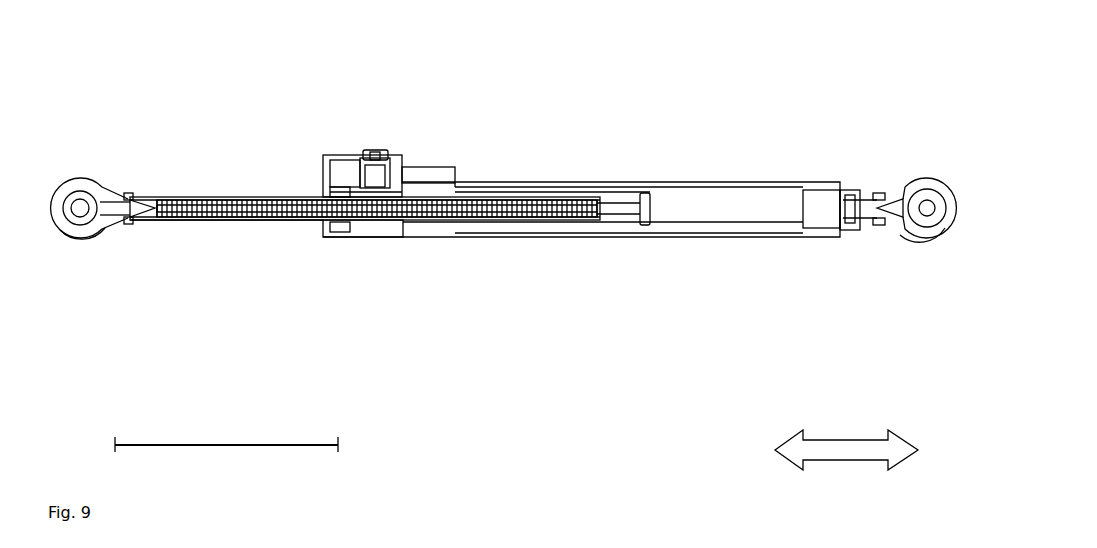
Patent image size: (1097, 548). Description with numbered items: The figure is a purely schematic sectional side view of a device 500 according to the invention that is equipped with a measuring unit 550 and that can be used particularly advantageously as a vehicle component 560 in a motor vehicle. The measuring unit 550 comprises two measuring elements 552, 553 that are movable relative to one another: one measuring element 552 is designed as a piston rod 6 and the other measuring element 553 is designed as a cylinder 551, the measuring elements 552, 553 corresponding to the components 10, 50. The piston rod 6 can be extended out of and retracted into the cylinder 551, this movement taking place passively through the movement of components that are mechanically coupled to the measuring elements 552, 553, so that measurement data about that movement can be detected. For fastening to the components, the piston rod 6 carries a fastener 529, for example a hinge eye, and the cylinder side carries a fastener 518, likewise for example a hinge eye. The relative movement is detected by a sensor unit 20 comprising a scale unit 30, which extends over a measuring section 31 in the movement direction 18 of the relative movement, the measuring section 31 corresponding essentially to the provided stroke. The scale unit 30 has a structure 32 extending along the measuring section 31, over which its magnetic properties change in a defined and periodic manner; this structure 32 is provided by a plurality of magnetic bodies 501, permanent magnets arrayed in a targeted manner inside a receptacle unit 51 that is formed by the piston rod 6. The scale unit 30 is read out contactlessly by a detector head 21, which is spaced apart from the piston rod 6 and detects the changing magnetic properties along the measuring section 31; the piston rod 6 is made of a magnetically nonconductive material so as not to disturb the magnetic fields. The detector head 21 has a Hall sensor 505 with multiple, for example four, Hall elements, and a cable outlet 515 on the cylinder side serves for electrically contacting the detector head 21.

The device 500 is at (123, 44).
The component 10 is at (167, 192).
The piston rod 6 is at (152, 199).
The scale unit 30 is at (190, 195).
The structure 32 is at (240, 195).
The magnetic bodies 501 is at (288, 197).
The sensor unit 20 is at (302, 154).
The detector head 21 is at (386, 136).
The Hall sensor 505 is at (368, 194).
The cable outlet 515 is at (422, 175).
The component 50 is at (577, 171).
The measuring element 553 is at (647, 180).
The cylinder 551 is at (723, 182).
The vehicle component 560 is at (800, 84).
The measuring unit 550 is at (873, 112).
The fastener 529 is at (93, 238).
The receptacle unit 51 is at (186, 216).
The measuring element 552 is at (241, 223).
The fastener 518 is at (918, 238).
The measuring section 31 is at (183, 443).
The movement direction 18 is at (830, 437).